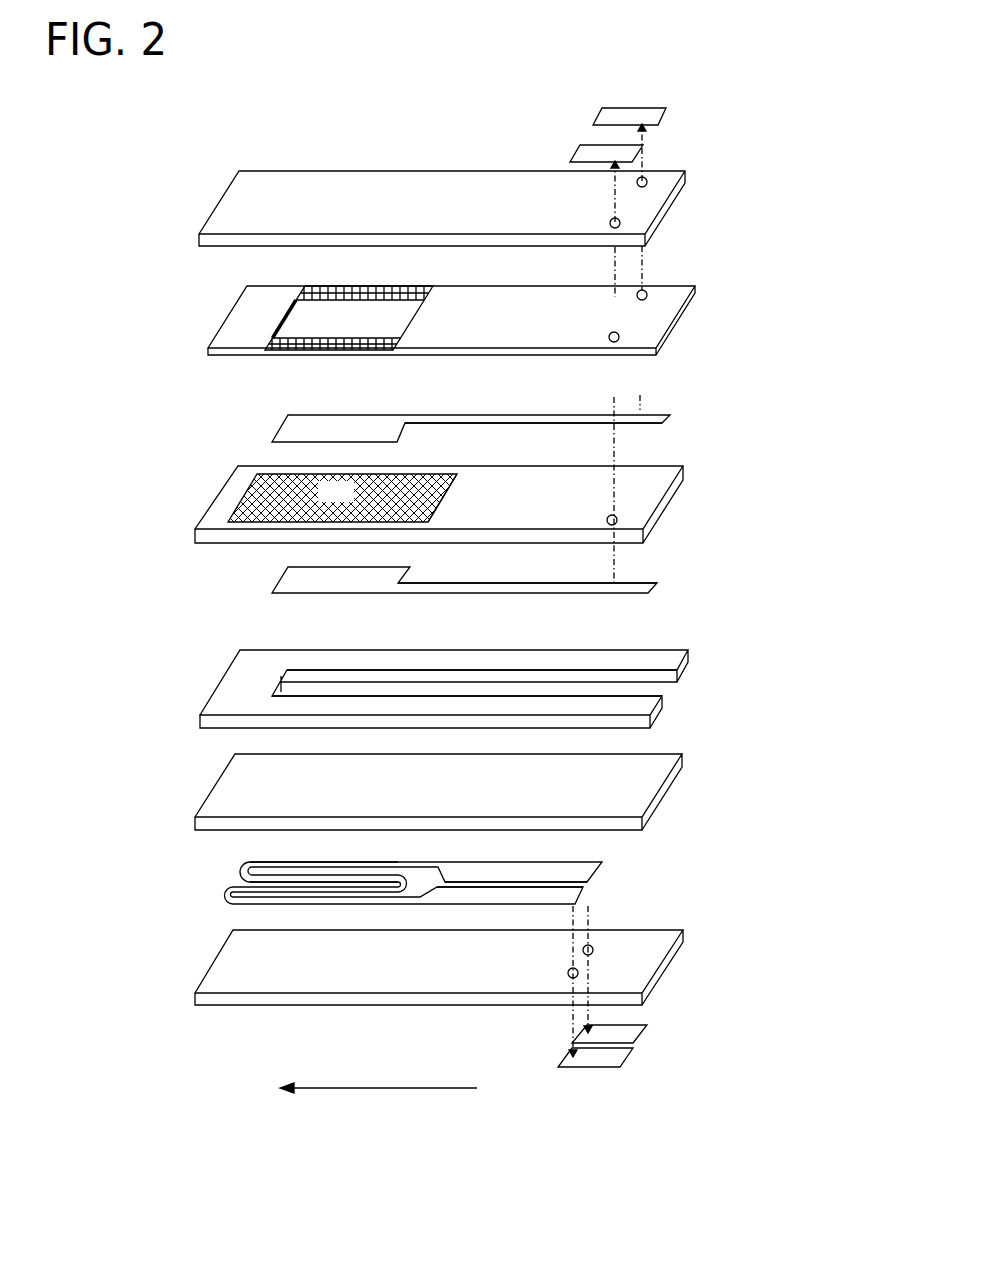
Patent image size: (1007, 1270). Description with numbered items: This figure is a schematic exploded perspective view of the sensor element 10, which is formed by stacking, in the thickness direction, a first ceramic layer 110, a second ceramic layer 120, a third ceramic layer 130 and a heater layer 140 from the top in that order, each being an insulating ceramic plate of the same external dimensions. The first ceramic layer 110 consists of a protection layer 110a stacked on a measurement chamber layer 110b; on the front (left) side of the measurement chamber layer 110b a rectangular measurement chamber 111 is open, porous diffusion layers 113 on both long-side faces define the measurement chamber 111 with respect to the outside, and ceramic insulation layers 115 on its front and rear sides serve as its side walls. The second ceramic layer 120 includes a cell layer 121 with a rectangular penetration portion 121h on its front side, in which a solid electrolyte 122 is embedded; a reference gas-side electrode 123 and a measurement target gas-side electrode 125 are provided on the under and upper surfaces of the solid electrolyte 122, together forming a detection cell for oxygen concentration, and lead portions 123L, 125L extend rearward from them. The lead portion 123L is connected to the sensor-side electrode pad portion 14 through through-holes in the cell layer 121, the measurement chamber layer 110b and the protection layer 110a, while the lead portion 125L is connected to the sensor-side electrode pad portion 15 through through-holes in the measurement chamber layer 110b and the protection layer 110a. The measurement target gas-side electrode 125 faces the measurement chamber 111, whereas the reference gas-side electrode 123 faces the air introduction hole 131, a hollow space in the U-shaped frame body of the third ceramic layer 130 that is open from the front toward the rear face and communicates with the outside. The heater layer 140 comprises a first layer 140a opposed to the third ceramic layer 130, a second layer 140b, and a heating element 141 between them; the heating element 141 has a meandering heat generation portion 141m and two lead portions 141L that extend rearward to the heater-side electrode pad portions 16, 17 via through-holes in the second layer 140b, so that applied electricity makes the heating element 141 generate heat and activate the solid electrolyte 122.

The sensor element 10 is at (142, 1007).
The sensor-side electrode pad portion 14 is at (590, 153).
The sensor-side electrode pad portion 15 is at (652, 113).
The heater-side electrode pad portion 16 is at (597, 1062).
The heater-side electrode pad portion 17 is at (628, 1037).
The first ceramic layer 110 is at (755, 255).
The protection layer 110a is at (652, 212).
The measurement chamber layer 110b is at (657, 318).
The measurement chamber 111 is at (353, 319).
The porous diffusion layer 113 is at (380, 292).
The ceramic insulation layer 115 is at (270, 298).
The second ceramic layer 120 is at (726, 428).
The cell layer 121 is at (638, 508).
The penetration portion 121h is at (447, 487).
The solid electrolyte 122 is at (342, 498).
The reference gas-side electrode 123 is at (652, 583).
The lead portion 123L is at (510, 588).
The measurement target gas-side electrode 125 is at (650, 420).
The lead portion 125L is at (490, 414).
The third ceramic layer 130 is at (670, 663).
The air introduction hole 131 is at (668, 692).
The heater layer 140 is at (726, 835).
The first layer 140a is at (642, 800).
The second layer 140b is at (640, 942).
The heating element 141 is at (503, 902).
The lead portion 141L is at (497, 873).
The heat generation portion 141m is at (293, 858).